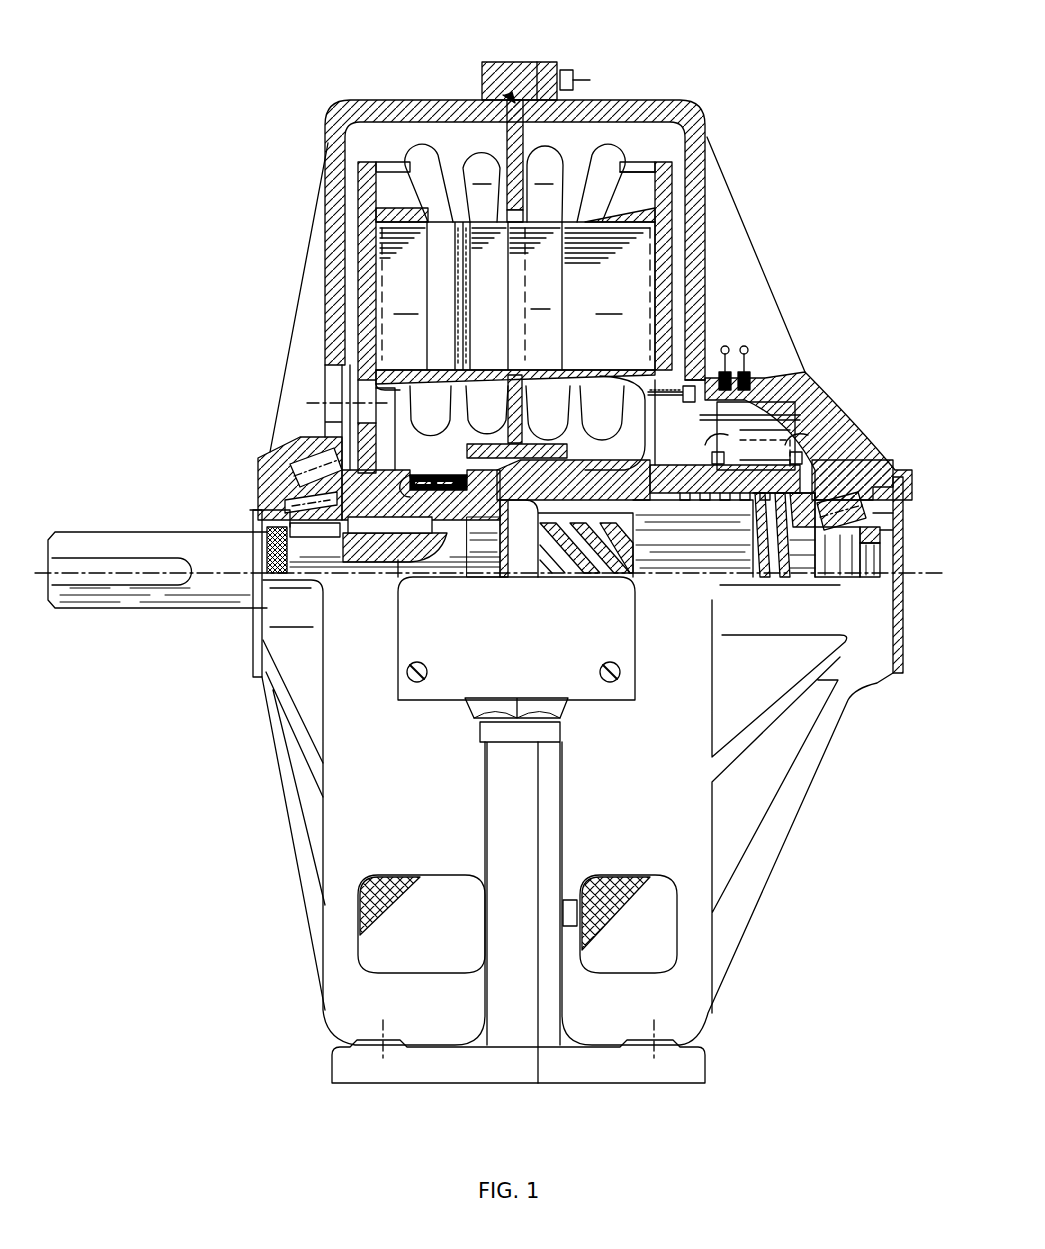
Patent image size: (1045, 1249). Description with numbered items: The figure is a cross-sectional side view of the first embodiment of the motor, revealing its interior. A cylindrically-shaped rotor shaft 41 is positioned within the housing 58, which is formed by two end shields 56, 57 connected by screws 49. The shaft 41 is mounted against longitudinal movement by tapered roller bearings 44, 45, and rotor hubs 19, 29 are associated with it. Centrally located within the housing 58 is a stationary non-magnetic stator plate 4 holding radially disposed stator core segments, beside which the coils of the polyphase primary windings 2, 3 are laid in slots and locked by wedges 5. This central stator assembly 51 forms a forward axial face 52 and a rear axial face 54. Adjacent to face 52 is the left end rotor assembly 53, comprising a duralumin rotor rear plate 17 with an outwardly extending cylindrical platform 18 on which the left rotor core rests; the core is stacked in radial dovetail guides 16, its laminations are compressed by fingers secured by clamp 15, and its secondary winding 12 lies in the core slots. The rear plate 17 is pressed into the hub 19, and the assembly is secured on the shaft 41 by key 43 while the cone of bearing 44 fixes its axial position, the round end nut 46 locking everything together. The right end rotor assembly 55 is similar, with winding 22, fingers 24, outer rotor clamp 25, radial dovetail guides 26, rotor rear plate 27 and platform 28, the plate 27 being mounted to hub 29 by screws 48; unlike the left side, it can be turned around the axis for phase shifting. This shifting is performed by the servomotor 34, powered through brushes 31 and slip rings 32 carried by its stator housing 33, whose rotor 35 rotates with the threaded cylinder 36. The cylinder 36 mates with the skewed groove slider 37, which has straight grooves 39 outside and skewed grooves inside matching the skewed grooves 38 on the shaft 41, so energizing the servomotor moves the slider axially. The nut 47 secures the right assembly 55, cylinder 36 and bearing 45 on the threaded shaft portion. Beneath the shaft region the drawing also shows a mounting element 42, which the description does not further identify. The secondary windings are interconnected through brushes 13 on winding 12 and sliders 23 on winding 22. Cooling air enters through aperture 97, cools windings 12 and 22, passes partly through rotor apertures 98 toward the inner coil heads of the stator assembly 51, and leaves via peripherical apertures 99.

The primary winding 2 is at (481, 187).
The primary winding 3 is at (545, 184).
The non-magnetic stator plate 4 is at (525, 136).
The wedges 5 is at (466, 262).
The secondary winding 12 is at (425, 160).
The brushes 13 is at (447, 476).
The clamp 15 is at (372, 192).
The radial dovetail guides 16 is at (378, 285).
The rotor rear plate 17 is at (368, 385).
The platform 18 is at (378, 336).
The rotor hub 19 is at (362, 535).
The winding 22 is at (610, 160).
The sliders 23 is at (647, 518).
The fingers 24 is at (660, 168).
The outer rotor clamp 25 is at (625, 212).
The radial dovetail guides 26 is at (670, 290).
The rotor rear plate 27 is at (695, 300).
The platform 28 is at (614, 372).
The rotor hub 29 is at (688, 395).
The brushes 31 is at (765, 400).
The slip rings 32 is at (772, 386).
The stator housing 33 is at (795, 418).
The servomotor 34 is at (805, 437).
The rotor 35 is at (805, 458).
The threaded cylinder 36 is at (808, 545).
The skewed groove slider 37 is at (740, 552).
The skewed grooves 38 is at (605, 578).
The straight grooves 39 is at (690, 578).
The rotor shaft 41 is at (190, 608).
The mounting block 42 is at (500, 577).
The key 43 is at (405, 532).
The tapered roller bearing 44 is at (330, 494).
The tapered roller bearing 45 is at (865, 540).
The round end nut 46 is at (275, 522).
The nut 47 is at (903, 530).
The screws 48 is at (722, 345).
The screws 49 is at (577, 72).
The central stator assembly 51 is at (515, 92).
The forward axial face 52 is at (465, 318).
The left end rotor assembly 53 is at (370, 160).
The rear axial face 54 is at (566, 292).
The right end rotor assembly 55 is at (626, 143).
The end shield 56 is at (512, 62).
The end shield 57 is at (605, 102).
The housing 58 is at (398, 74).
The aperture 97 is at (340, 432).
The rotor apertures 98 is at (380, 412).
The peripherical apertures 99 is at (645, 905).